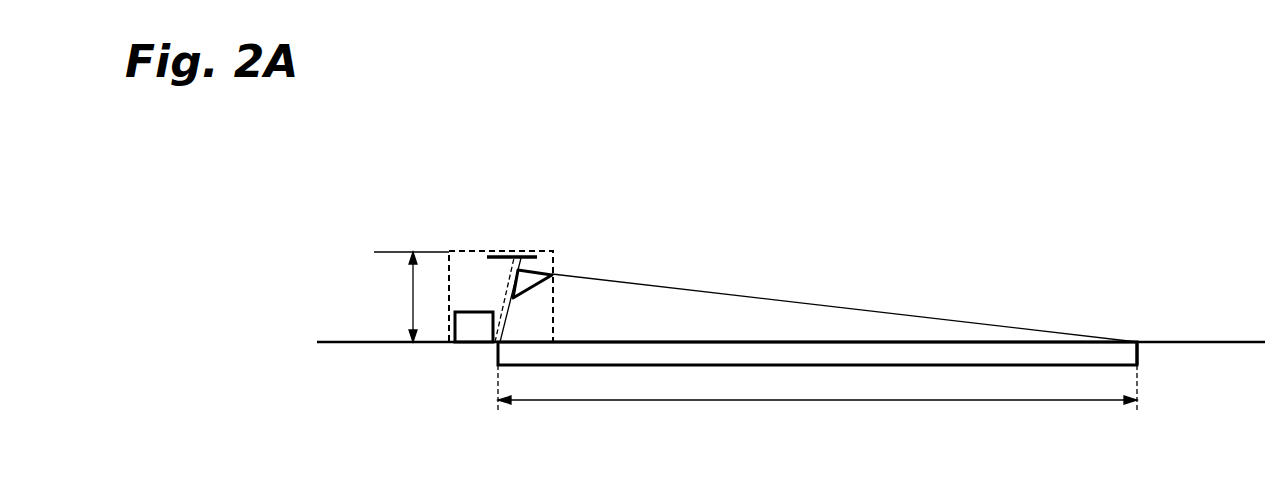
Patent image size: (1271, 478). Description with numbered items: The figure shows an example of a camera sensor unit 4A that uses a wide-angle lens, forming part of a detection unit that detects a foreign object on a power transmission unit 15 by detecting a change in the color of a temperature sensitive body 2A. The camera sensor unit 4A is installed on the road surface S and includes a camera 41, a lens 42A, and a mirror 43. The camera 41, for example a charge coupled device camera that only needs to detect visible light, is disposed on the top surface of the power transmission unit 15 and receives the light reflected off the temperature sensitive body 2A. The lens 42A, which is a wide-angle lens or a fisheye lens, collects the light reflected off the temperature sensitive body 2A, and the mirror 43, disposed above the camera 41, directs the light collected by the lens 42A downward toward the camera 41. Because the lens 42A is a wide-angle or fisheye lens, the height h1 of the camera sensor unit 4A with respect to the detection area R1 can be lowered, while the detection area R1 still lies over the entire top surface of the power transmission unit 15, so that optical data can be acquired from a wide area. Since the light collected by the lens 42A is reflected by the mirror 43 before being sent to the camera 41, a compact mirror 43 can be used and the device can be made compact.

The temperature sensitive body 2A is at (1007, 341).
The power transmission unit 15 is at (1140, 352).
The road surface S is at (1241, 340).
The camera sensor unit 4A is at (474, 250).
The camera 41 is at (473, 333).
The lens 42A is at (539, 288).
The mirror 43 is at (526, 247).
The height h1 is at (411, 297).
The detection area R1 is at (809, 402).